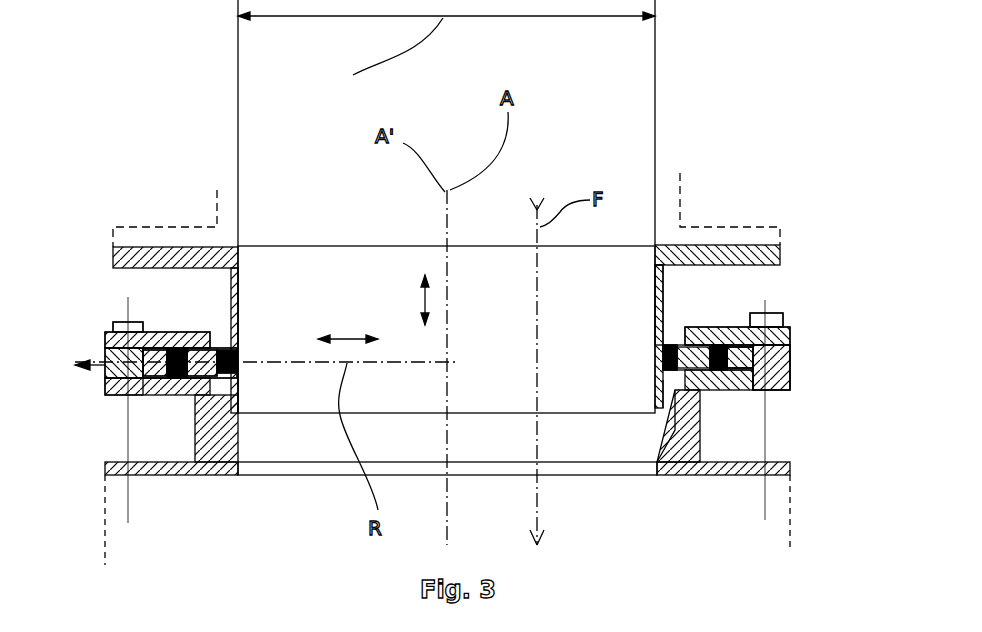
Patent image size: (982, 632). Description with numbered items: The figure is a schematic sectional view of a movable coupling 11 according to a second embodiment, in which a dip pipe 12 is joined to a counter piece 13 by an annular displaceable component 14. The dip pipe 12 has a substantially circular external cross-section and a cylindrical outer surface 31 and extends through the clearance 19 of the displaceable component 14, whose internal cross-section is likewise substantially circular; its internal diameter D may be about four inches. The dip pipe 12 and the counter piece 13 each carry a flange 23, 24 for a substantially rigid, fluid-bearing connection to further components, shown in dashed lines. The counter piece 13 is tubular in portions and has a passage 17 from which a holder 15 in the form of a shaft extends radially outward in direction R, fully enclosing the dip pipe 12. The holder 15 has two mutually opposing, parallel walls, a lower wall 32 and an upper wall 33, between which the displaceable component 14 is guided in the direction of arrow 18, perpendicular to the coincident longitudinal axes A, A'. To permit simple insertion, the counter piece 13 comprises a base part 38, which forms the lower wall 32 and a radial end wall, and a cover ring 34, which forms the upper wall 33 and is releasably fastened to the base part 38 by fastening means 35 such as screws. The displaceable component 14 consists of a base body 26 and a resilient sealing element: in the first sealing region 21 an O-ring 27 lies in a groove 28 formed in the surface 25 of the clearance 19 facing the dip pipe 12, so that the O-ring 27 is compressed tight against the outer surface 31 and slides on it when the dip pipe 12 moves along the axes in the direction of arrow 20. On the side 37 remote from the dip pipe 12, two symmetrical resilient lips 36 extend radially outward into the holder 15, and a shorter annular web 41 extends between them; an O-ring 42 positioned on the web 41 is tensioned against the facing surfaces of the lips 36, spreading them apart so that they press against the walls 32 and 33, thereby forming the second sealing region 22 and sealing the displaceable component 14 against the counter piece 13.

The movable coupling 11 is at (138, 182).
The dip pipe 12 is at (664, 343).
The counter piece 13 is at (790, 370).
The displaceable component 14 is at (182, 357).
The holder 15 is at (787, 378).
The passage 17 is at (282, 447).
The arrow 18 is at (350, 339).
The clearance 19 is at (665, 338).
The arrow 20 is at (422, 297).
The first sealing region 21 is at (655, 362).
The second sealing region 22 is at (155, 332).
The flange 23 is at (745, 247).
The flange 24 is at (727, 470).
The surface of the clearance 25 is at (243, 372).
The base body 26 is at (235, 417).
The O-ring 27 is at (240, 358).
The groove 28 is at (683, 363).
The outer surface 31 is at (672, 400).
The lower wall 32 is at (137, 397).
The upper wall 33 is at (120, 385).
The cover ring 34 is at (170, 333).
The fastening means 35 is at (115, 323).
The resilient lips 36 is at (172, 350).
The side 37 is at (737, 365).
The base part 38 is at (110, 372).
The web 41 is at (160, 333).
The O-ring 42 is at (175, 378).